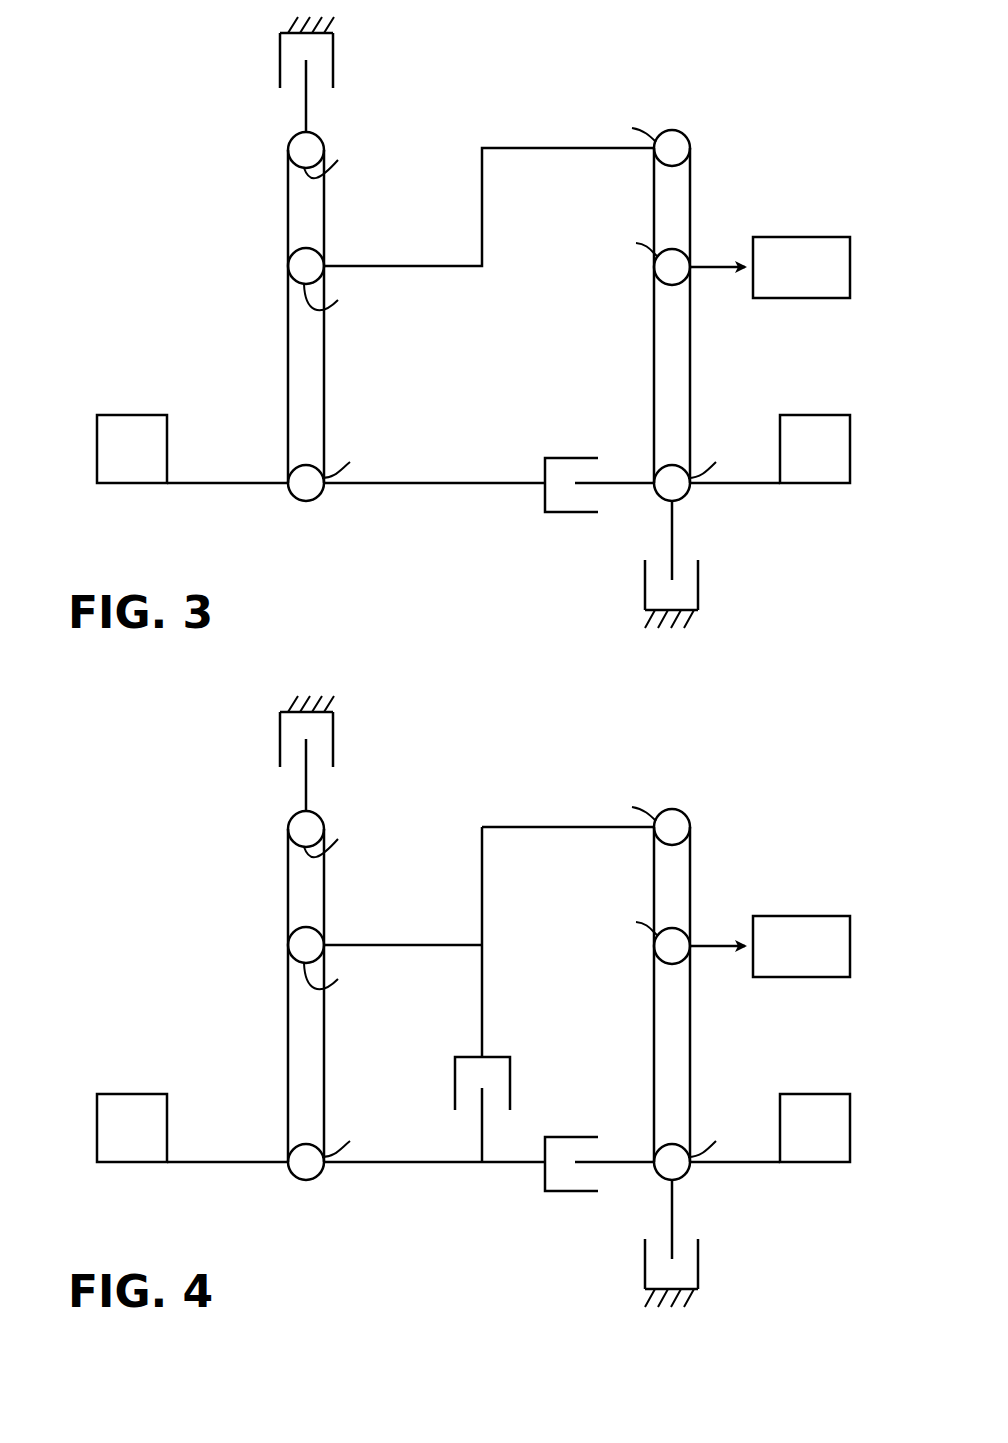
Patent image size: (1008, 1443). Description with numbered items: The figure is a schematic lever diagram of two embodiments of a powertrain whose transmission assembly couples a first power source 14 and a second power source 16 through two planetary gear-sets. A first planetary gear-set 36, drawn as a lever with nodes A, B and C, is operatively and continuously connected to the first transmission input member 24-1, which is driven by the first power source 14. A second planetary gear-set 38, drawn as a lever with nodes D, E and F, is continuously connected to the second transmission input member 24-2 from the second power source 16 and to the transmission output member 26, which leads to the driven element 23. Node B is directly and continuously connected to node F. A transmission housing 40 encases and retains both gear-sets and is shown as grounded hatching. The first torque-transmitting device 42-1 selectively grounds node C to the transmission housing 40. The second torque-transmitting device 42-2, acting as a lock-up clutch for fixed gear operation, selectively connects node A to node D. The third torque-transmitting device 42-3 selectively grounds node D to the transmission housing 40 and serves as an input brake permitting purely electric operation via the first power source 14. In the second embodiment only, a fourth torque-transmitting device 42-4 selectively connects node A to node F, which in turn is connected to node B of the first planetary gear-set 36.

In FIG. 3, the first power source 14 is at (97, 450).
In FIG. 4, the first power source 14 is at (101, 1121).
In FIG. 3, the second power source 16 is at (850, 440).
In FIG. 4, the second power source 16 is at (835, 1114).
In FIG. 3, the driven device / output load 23 is at (822, 237).
In FIG. 4, the driven device / output load 23 is at (815, 920).
In FIG. 3, the first transmission input member 24-1 is at (227, 486).
In FIG. 4, the first transmission input member 24-1 is at (410, 1197).
In FIG. 3, the second transmission input member 24-2 is at (716, 486).
In FIG. 4, the second transmission input member 24-2 is at (741, 1195).
In FIG. 3, the transmission output member 26 is at (716, 268).
In FIG. 4, the transmission output member 26 is at (719, 993).
In FIG. 3, the first planetary gear-set 36 is at (362, 180).
In FIG. 4, the first planetary gear-set 36 is at (364, 979).
In FIG. 3, the second planetary gear-set 38 is at (720, 172).
In FIG. 4, the second planetary gear-set 38 is at (701, 987).
In FIG. 3, the transmission housing 40 is at (345, 0).
In FIG. 4, the transmission housing 40 is at (489, 1011).
In FIG. 3, the first torque-transmitting device 42-1 is at (333, 70).
In FIG. 4, the first torque-transmitting device 42-1 is at (358, 757).
In FIG. 3, the second torque-transmitting device 42-2 is at (558, 458).
In FIG. 4, the second torque-transmitting device 42-2 is at (559, 1135).
In FIG. 3, the third torque-transmitting device 42-3 is at (645, 578).
In FIG. 4, the third torque-transmitting device 42-3 is at (618, 1234).
In FIG. 4, the fourth torque-transmitting device 42-4 is at (507, 994).